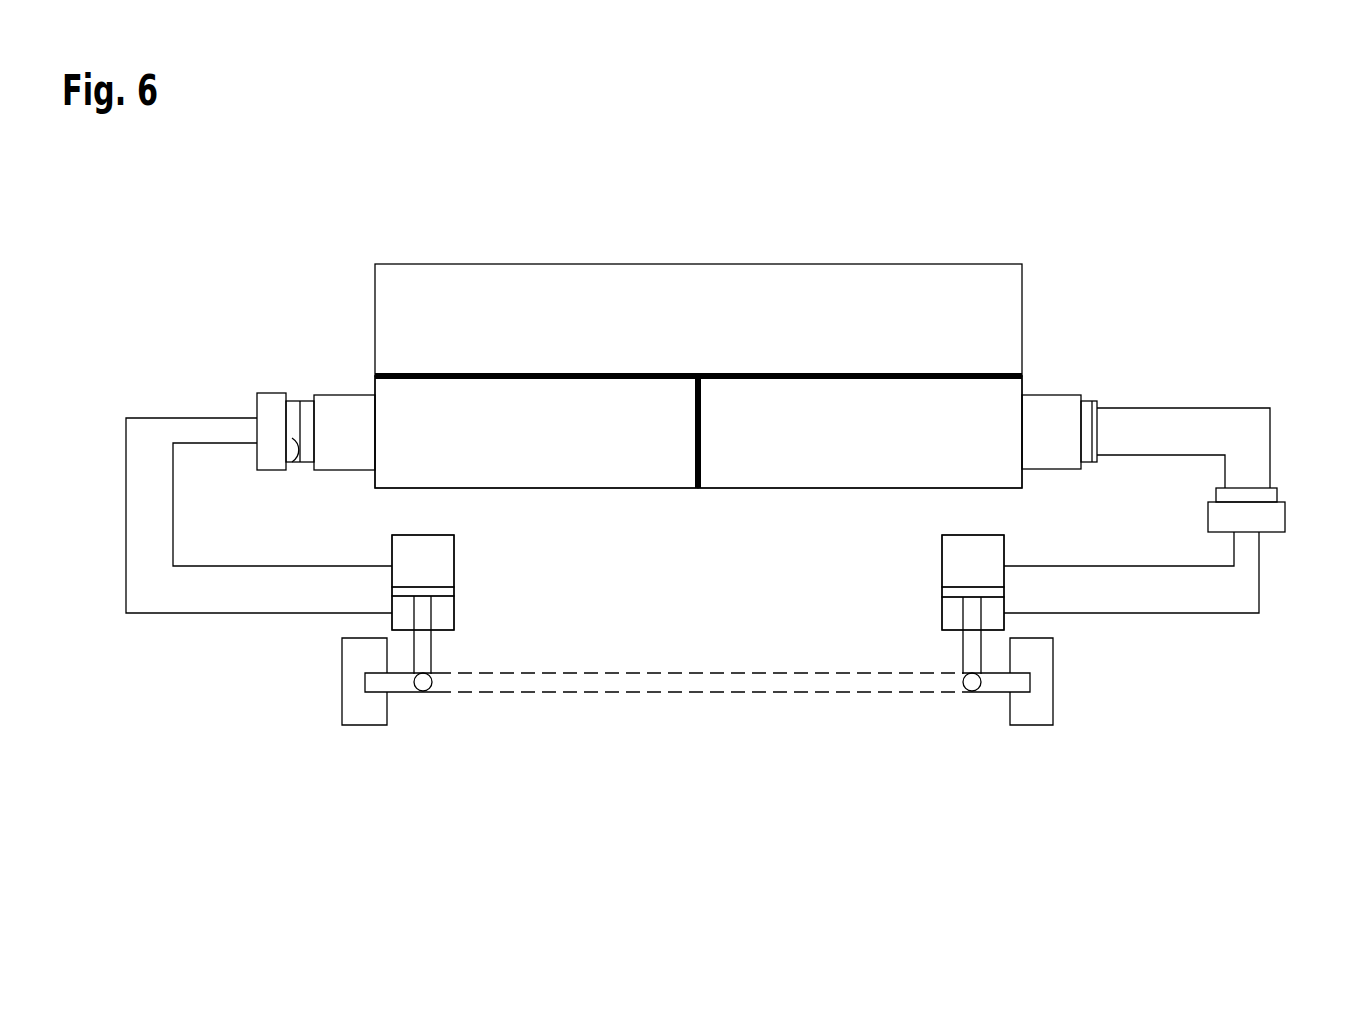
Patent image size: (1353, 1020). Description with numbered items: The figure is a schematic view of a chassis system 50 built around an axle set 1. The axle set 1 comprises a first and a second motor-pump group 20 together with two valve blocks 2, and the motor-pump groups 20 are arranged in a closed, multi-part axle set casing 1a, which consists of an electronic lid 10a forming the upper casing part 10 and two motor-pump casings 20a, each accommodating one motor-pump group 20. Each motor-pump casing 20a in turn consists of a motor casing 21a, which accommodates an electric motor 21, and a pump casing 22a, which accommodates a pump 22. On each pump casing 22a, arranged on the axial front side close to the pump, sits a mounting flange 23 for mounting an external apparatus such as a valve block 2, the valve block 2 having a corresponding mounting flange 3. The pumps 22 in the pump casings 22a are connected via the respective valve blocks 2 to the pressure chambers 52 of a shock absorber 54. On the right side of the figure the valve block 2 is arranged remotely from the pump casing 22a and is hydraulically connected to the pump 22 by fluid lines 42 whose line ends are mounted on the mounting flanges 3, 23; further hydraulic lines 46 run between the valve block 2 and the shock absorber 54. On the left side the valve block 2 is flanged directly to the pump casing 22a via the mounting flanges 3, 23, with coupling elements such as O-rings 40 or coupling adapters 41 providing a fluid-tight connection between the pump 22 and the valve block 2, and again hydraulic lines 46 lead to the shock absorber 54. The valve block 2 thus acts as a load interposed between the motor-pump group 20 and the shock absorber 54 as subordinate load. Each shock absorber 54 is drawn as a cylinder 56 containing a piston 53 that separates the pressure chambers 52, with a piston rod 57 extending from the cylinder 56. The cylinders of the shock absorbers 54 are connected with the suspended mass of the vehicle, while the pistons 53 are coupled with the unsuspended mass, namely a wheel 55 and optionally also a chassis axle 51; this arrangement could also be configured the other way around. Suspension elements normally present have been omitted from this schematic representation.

The axle set 1 is at (733, 467).
The axle set casing 1a is at (733, 497).
The valve block 2 is at (272, 393).
The mounting flange 3 is at (294, 401).
The first roller body 10 is at (698, 284).
The electronic lid 10a is at (660, 300).
The motor-pump group 20 is at (698, 502).
The motor-pump casing 20a is at (698, 473).
The electric motor 21 is at (698, 473).
The motor casing 21a is at (633, 450).
The pump 22 is at (720, 331).
The pump casing 22a is at (343, 395).
The mounting flange 23 is at (308, 400).
The O-ring 40 is at (301, 493).
The coupling adapter 41 is at (294, 462).
The fluid line 42 is at (1190, 455).
The hydraulic line 46 is at (218, 443).
The chassis system 50 is at (741, 655).
The chassis axle 51 is at (693, 692).
The pressure chamber 52 is at (951, 553).
The piston 53 is at (951, 592).
The shock absorber 54 is at (457, 639).
The wheel 55 is at (1053, 708).
The cylinder 56 is at (942, 540).
The piston rod 57 is at (962, 655).